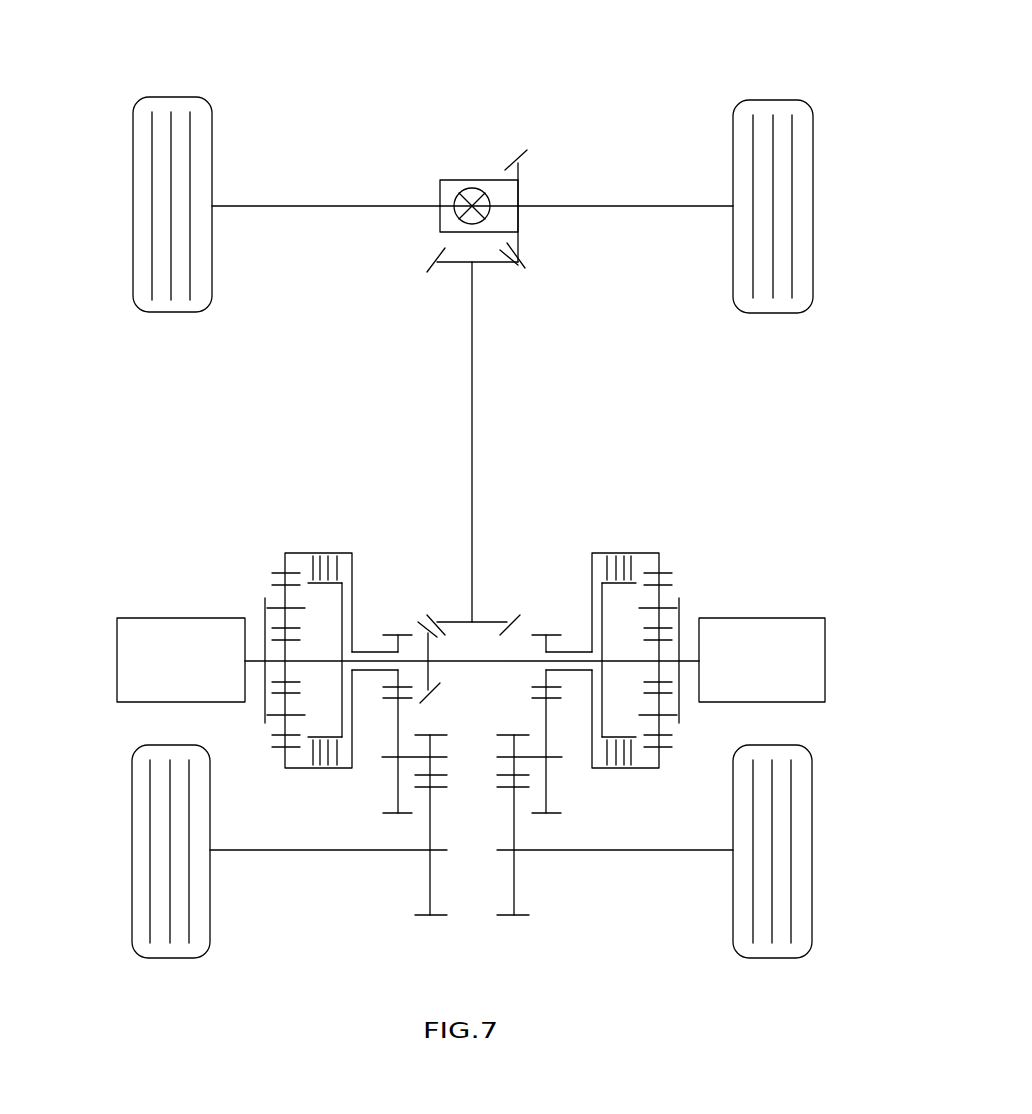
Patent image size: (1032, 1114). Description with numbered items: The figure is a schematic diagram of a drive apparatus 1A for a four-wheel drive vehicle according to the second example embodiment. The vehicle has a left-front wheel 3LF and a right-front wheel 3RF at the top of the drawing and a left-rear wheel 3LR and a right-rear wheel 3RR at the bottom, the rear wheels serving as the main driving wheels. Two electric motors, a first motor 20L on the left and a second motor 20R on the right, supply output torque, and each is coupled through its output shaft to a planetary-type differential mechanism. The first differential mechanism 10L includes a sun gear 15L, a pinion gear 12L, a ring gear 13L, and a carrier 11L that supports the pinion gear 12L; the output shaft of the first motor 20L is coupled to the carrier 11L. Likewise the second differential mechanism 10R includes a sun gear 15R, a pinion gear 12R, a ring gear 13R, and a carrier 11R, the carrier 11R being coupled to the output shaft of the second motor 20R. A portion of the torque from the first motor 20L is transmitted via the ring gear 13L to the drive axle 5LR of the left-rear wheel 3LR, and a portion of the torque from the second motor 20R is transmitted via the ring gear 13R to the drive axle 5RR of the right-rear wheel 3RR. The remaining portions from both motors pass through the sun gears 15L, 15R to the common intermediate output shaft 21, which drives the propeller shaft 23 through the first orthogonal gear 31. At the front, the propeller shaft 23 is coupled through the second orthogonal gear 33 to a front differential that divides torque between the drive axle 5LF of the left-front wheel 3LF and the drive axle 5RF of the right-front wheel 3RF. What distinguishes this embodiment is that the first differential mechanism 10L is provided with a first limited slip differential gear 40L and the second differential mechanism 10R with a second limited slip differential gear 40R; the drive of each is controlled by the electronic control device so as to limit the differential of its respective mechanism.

The drive apparatus 1A is at (738, 74).
The left-front wheel 3LF is at (134, 233).
The right-front wheel 3RF is at (806, 233).
The left-rear wheel 3LR is at (134, 867).
The right-rear wheel 3RR is at (806, 866).
The drive axle 5LF is at (300, 207).
The drive axle 5RF is at (622, 207).
The drive axle 5LR is at (293, 852).
The drive axle 5RR is at (620, 852).
The second orthogonal gear 33 is at (462, 171).
The propeller shaft 23 is at (474, 440).
The first orthogonal gear 31 is at (428, 615).
The intermediate output shaft 21 is at (465, 665).
The first differential mechanism 10L is at (271, 549).
The second differential mechanism 10R is at (674, 549).
The carrier 11L is at (263, 625).
The carrier 11R is at (681, 625).
The pinion gear 12L is at (282, 592).
The pinion gear 12R is at (660, 592).
The ring gear 13L is at (293, 551).
The ring gear 13R is at (651, 551).
The sun gear 15L is at (283, 673).
The sun gear 15R is at (661, 673).
The first motor 20L is at (188, 619).
The second motor 20R is at (757, 619).
The first limited slip differential gear 40L is at (332, 540).
The second limited slip differential gear 40R is at (612, 540).